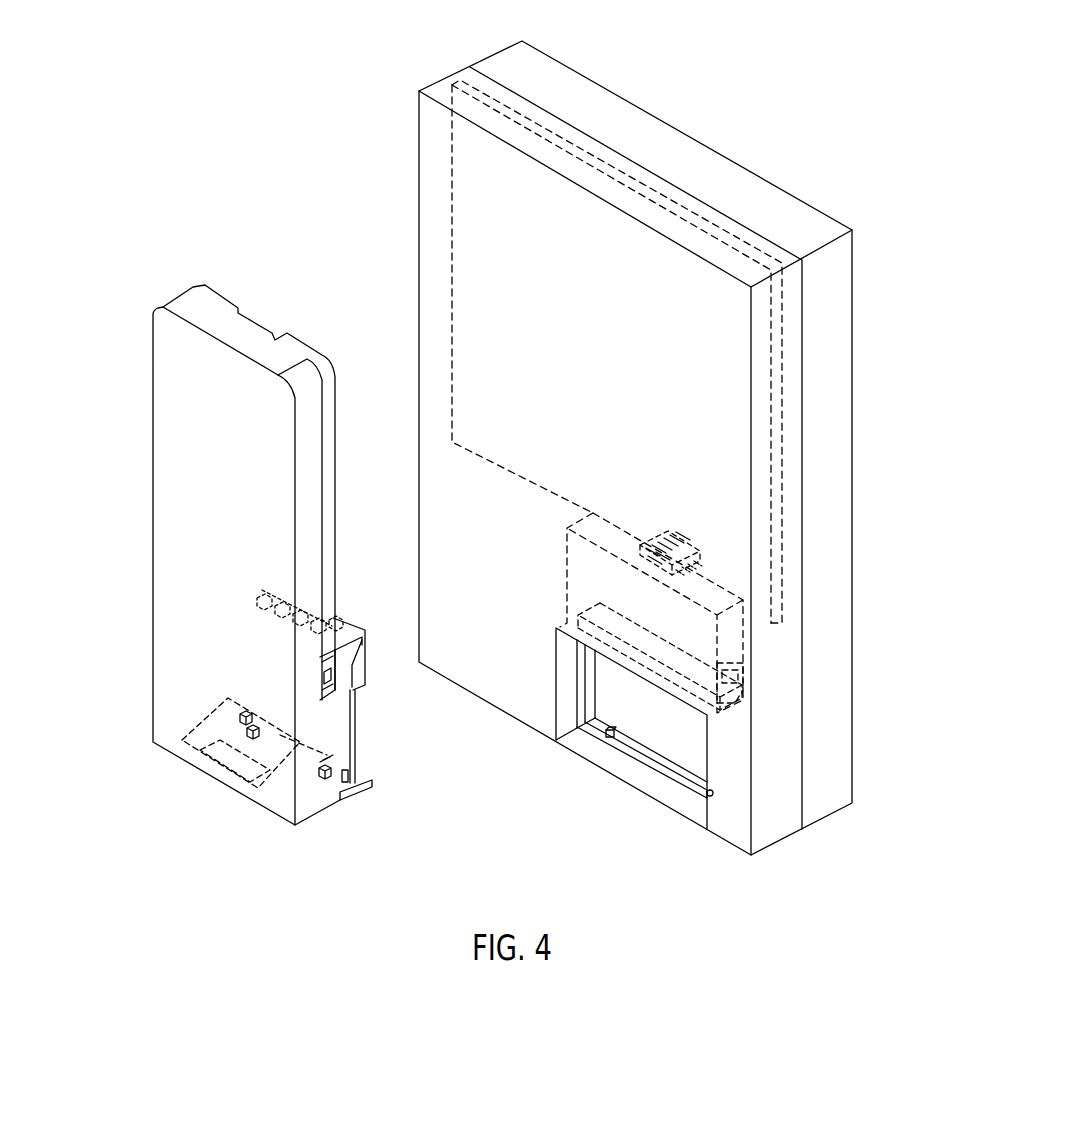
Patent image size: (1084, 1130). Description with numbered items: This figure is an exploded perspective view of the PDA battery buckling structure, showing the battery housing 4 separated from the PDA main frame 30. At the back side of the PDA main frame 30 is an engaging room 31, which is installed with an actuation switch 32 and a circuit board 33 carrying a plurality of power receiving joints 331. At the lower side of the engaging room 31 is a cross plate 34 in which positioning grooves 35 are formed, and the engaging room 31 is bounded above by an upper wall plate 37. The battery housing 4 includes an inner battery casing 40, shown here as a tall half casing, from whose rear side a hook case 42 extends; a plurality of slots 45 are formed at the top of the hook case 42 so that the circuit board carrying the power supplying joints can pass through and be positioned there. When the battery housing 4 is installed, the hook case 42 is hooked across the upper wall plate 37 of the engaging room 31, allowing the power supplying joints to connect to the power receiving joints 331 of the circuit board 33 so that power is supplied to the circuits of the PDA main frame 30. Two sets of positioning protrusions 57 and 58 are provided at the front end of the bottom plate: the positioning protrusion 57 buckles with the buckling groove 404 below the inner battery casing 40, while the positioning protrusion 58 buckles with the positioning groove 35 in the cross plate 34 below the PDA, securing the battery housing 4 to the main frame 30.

The battery housing 4 is at (262, 287).
The PDA main frame 30 is at (690, 137).
The engaging room 31 is at (570, 690).
The actuation switch 32 is at (757, 662).
The circuit board 33 is at (782, 520).
The power receiving joints 331 is at (690, 567).
The cross plate 34 is at (657, 760).
The positioning grooves 35 is at (587, 732).
The upper wall plate 37 is at (683, 699).
The inner battery casing 40 is at (150, 410).
The hook case 42 is at (362, 675).
The slots 45 is at (337, 617).
The positioning protrusion 57 is at (357, 758).
The positioning protrusion 58 is at (357, 773).
The buckling groove 404 is at (313, 770).